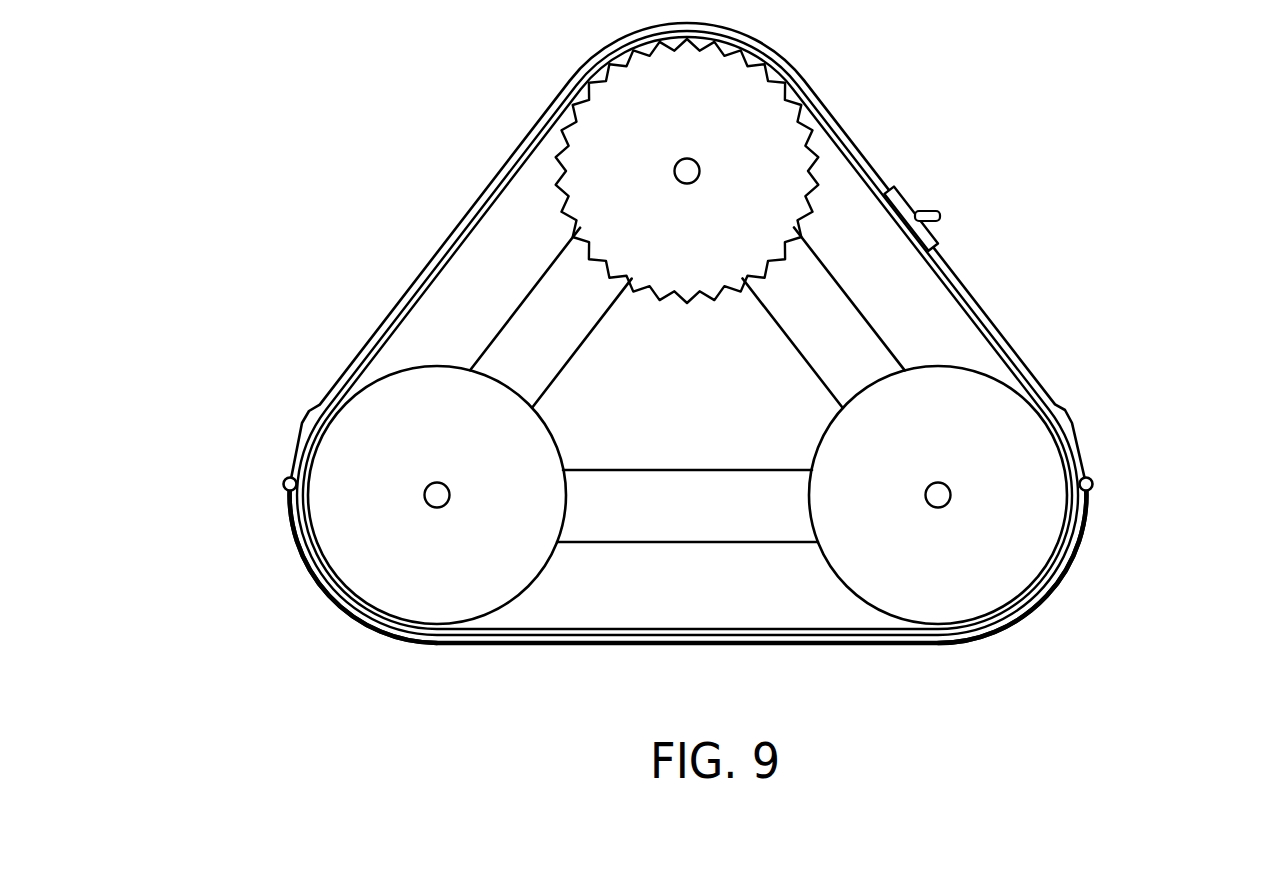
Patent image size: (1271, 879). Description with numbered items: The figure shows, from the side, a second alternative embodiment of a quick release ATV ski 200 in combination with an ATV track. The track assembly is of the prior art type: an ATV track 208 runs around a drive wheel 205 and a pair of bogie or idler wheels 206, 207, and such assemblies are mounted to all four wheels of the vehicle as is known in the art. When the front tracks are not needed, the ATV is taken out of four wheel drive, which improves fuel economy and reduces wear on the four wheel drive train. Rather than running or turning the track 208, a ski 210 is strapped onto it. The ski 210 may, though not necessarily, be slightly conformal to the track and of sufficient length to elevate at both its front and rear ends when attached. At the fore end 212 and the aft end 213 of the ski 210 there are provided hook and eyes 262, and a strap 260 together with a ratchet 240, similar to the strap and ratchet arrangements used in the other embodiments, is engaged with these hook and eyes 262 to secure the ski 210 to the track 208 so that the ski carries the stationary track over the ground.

The ATV ski 200 is at (330, 162).
The drive wheel 205 is at (678, 128).
The bogie or idler wheel 206 is at (425, 452).
The bogie or idler wheel 207 is at (952, 460).
The ATV track 208 is at (952, 309).
The ski 210 is at (325, 596).
The fore end 212 is at (1090, 521).
The aft end 213 is at (291, 520).
The ratchet 240 is at (940, 217).
The strap 260 is at (583, 72).
The hook and eyes 262 is at (287, 478).